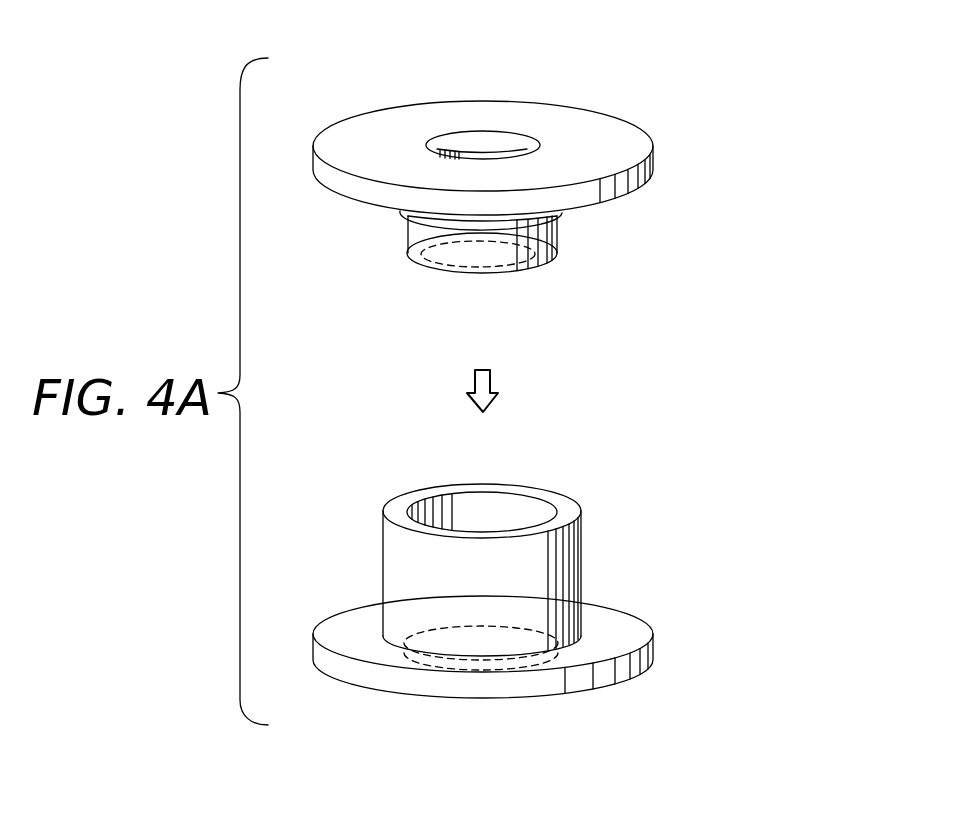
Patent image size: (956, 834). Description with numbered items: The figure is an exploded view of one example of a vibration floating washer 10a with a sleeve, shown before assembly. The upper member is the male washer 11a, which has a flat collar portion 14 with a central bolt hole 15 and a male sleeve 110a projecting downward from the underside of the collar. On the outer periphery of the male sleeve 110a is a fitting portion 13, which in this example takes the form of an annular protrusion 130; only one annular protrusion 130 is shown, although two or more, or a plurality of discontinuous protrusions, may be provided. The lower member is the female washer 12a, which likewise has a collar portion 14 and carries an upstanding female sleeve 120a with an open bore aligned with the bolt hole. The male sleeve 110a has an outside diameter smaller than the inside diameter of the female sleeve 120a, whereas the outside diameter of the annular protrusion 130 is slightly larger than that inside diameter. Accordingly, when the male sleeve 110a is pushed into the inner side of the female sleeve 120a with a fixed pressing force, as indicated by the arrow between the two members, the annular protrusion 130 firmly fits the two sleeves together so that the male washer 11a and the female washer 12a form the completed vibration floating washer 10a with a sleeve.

The vibration floating washer with a sleeve 10a is at (576, 78).
The male washer 11a is at (665, 149).
The fitting portion 13 is at (578, 225).
The annular protrusion 130 is at (560, 215).
The male sleeve 110a is at (418, 255).
The collar portion 14 is at (393, 127).
The bolt hole 15 is at (488, 153).
The female washer 12a is at (674, 588).
The female sleeve 120a is at (398, 557).